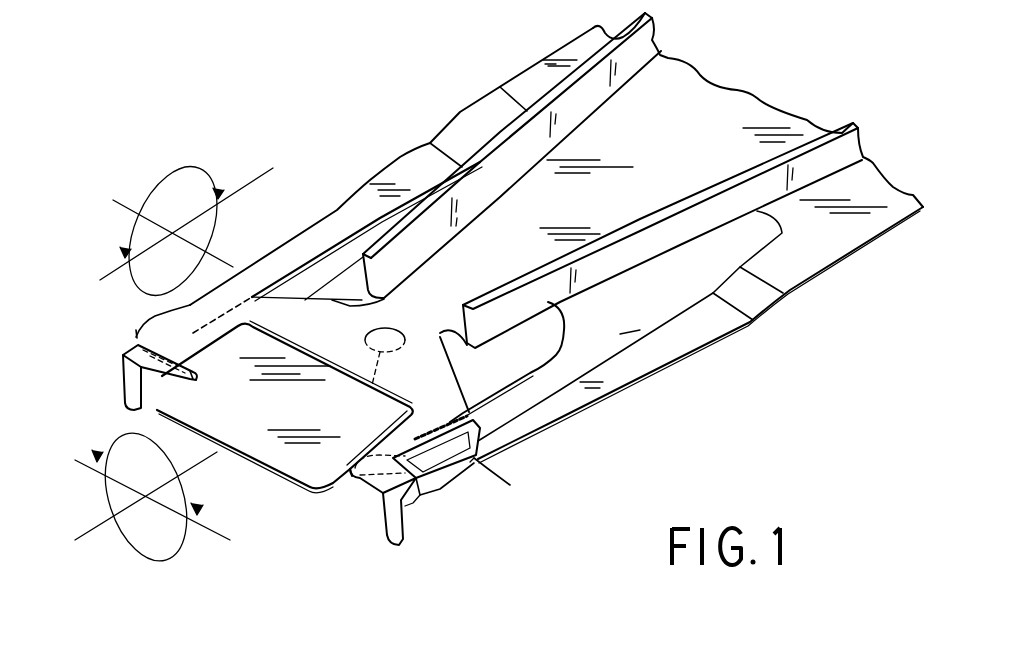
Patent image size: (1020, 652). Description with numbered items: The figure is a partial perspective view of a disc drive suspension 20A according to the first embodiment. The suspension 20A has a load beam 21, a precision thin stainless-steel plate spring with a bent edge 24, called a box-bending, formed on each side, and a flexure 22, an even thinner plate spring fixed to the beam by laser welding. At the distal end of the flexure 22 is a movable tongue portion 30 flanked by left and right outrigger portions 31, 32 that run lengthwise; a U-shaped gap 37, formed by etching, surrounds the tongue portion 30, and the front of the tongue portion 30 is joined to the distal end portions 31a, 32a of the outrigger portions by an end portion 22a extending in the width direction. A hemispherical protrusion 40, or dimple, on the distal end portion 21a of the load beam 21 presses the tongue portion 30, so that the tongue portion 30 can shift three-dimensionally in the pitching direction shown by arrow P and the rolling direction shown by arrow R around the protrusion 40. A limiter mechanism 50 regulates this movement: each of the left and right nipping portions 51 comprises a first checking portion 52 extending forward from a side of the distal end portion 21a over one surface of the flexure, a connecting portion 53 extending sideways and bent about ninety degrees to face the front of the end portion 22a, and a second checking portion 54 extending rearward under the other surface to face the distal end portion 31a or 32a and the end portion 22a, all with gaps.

The suspension 20A is at (420, 107).
The load beam 21 is at (720, 100).
The distal end portion of the load beam 21a is at (458, 366).
The flexure 22 is at (833, 247).
The end portion of the flexure 22a is at (137, 332).
The bent edge 24 is at (521, 113).
The tongue portion 30 is at (293, 478).
The outrigger portion 31 is at (340, 210).
The distal end portion of the outrigger portion 31a is at (190, 305).
The outrigger portion 32 is at (642, 363).
The distal end portion of the outrigger portion 32a is at (477, 473).
The gap 37 is at (618, 334).
The protrusion 40 is at (378, 357).
The limiter mechanism 50 is at (380, 553).
The nipping portion 51 is at (118, 379).
The first checking portion 52 is at (230, 306).
The connecting portion 53 is at (128, 349).
The second checking portion 54 is at (192, 379).
The arrow indicating pitch-angle direction P is at (200, 167).
The arrow indicating rolling direction R is at (193, 487).